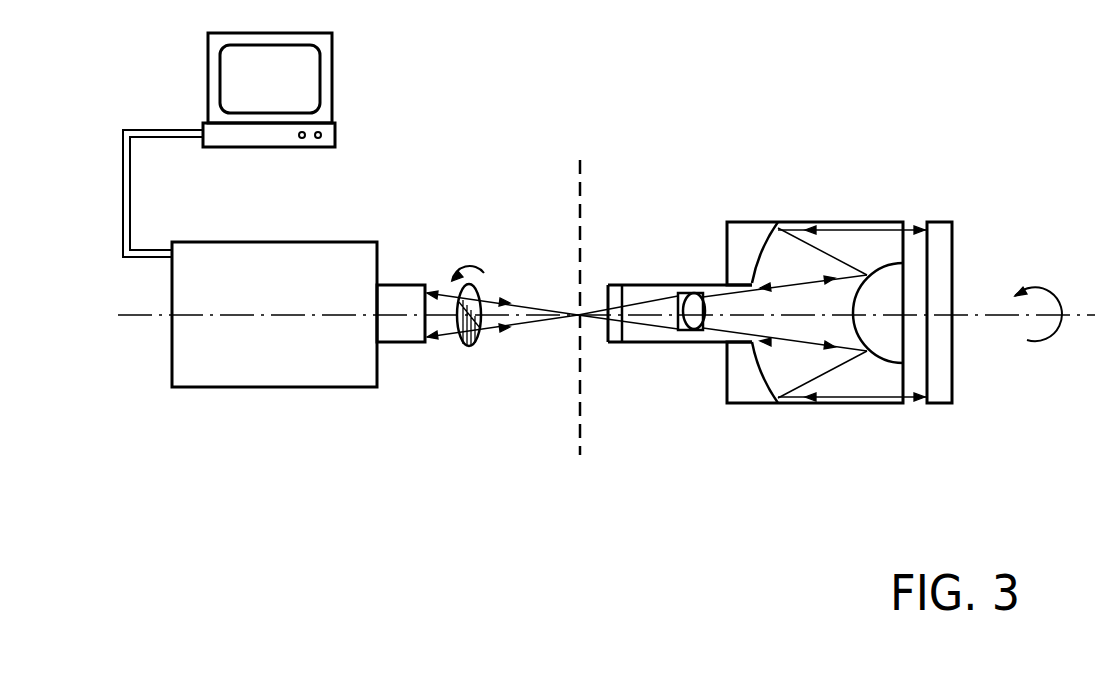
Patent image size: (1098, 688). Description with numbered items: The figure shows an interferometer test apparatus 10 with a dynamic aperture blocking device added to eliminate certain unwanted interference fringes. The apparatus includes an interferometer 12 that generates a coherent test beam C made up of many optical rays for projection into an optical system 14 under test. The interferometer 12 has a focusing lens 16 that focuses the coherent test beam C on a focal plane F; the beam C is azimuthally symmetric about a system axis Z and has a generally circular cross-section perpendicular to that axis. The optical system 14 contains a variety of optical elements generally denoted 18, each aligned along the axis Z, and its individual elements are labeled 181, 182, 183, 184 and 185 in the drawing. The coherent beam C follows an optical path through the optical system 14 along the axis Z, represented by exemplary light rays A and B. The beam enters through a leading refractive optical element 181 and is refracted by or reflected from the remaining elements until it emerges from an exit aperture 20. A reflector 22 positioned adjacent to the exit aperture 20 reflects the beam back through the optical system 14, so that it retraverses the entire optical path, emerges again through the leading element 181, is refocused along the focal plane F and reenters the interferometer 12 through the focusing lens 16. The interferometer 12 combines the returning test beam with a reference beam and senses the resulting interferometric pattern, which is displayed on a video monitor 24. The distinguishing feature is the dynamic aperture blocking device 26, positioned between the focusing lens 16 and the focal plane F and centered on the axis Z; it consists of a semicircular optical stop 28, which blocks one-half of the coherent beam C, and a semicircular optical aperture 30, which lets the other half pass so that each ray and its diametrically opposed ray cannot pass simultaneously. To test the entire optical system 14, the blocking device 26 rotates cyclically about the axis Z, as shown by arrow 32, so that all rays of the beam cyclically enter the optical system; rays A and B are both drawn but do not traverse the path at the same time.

The interferometer test apparatus 10 is at (513, 86).
The interferometer 12 is at (322, 250).
The optical system 14 is at (805, 185).
The focusing lens 16 is at (395, 330).
The optical elements 18 is at (646, 283).
The leading refractive optical element 181 is at (613, 335).
The lens mount 182 is at (680, 330).
The collimating lens 183 is at (697, 308).
The concave mirror 184 is at (746, 233).
The convex mirror 185 is at (887, 333).
The exit aperture 20 is at (915, 366).
The reflector 22 is at (940, 232).
The video monitor 24 is at (324, 54).
The dynamic aperture blocking device 26 is at (483, 350).
The semicircular optical stop 28 is at (463, 346).
The semicircular optical aperture 30 is at (470, 292).
The arrow 32 is at (468, 262).
The light ray A is at (447, 294).
The light ray B is at (447, 333).
The coherent test beam C is at (534, 298).
The focal plane F is at (584, 440).
The system axis Z is at (606, 340).